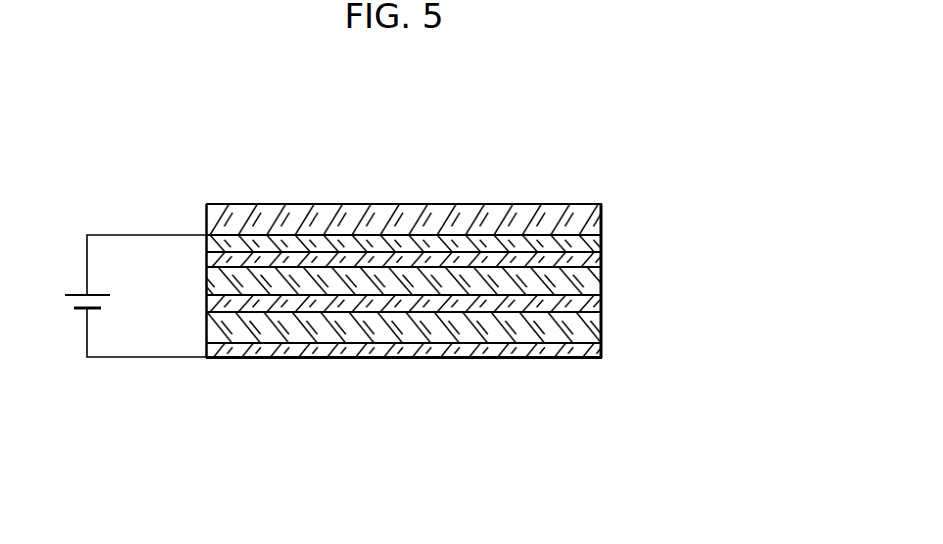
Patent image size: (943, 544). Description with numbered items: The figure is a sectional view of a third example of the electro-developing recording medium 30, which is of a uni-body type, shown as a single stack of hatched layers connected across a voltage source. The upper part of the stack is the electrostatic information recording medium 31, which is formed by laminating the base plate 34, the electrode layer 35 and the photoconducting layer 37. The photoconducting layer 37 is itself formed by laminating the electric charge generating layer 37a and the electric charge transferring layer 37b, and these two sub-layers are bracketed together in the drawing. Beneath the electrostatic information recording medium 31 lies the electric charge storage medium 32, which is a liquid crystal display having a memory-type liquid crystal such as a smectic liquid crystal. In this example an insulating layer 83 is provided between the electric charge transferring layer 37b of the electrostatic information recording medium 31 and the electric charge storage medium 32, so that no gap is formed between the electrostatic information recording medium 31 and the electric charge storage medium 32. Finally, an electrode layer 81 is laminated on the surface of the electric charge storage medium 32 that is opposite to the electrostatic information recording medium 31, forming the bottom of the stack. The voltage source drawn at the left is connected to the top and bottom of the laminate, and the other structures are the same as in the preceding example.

The electro-developing recording medium 30 is at (367, 292).
The electrostatic information recording medium 31 is at (398, 274).
The electric charge storage medium 32 is at (597, 329).
The base plate 34 is at (512, 220).
The electrode layer 35 is at (592, 243).
The photoconducting layer 37 is at (393, 274).
The electric charge generating layer 37a is at (207, 262).
The electric charge transferring layer 37b is at (207, 280).
The insulating layer 83 is at (597, 300).
The electrode layer 81 is at (458, 350).